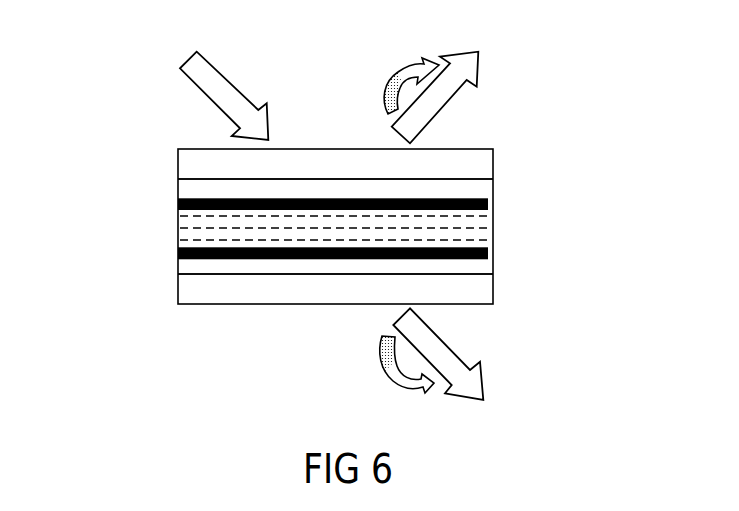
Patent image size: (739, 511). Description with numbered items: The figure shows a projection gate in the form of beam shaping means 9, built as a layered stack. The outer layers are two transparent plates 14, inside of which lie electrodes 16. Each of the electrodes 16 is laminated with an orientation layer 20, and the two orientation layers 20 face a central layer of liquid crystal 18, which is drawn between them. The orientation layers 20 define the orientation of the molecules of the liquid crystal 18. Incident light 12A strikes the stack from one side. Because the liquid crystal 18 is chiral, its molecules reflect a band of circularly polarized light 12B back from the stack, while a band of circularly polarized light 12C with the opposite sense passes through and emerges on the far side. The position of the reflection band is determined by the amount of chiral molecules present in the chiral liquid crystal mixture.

The beam shaping means 9 is at (142, 366).
The incident light 12A is at (183, 85).
The reflected band of circularly polarized light 12B is at (479, 80).
The transmitted band of circularly polarized light 12C is at (380, 368).
The transparent plates 14 is at (178, 152).
The electrodes 16 is at (178, 183).
The liquid crystal 18 is at (495, 225).
The orientation layers 20 is at (178, 207).